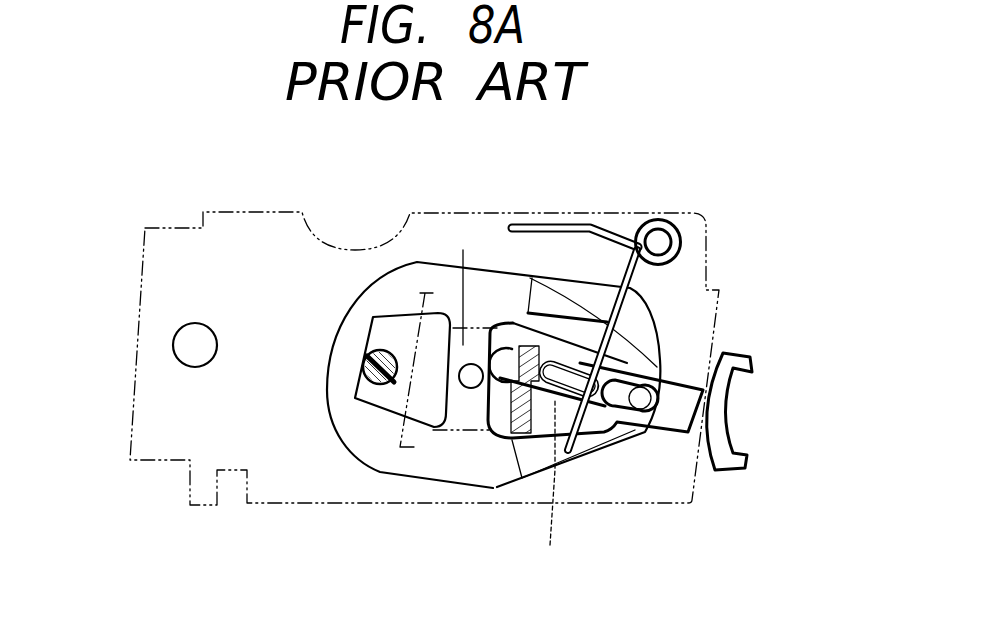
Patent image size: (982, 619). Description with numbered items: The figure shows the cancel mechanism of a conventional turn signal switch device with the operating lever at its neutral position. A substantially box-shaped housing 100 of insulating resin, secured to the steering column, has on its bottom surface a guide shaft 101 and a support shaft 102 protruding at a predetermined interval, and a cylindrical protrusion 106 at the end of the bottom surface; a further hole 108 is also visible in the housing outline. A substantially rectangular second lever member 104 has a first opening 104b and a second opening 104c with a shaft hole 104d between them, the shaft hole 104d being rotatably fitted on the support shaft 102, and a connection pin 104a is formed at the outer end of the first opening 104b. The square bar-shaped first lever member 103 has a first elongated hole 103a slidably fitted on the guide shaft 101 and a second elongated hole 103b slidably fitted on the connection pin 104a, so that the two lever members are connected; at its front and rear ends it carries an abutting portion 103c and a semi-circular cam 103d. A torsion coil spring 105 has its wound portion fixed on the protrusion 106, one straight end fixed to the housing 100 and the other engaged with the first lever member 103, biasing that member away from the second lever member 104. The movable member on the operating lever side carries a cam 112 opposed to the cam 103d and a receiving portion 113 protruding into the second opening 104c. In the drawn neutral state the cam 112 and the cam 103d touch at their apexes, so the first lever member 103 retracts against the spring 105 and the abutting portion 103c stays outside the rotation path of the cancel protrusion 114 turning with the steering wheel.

The housing 100 is at (143, 462).
The guide shaft 101 is at (556, 485).
The support shaft 102 is at (473, 378).
The first lever member 103 is at (681, 377).
The first elongated hole 103a is at (568, 360).
The second elongated hole 103b is at (603, 412).
The abutting portion 103c is at (687, 401).
The cam 103d is at (503, 420).
The second lever member 104 is at (417, 262).
The connection pin 104a is at (660, 402).
The first opening 104b is at (613, 357).
The second opening 104c is at (383, 410).
The shaft hole 104d is at (466, 250).
The torsion coil spring 105 is at (610, 233).
The protrusion 106 is at (660, 240).
The hole 108 is at (184, 345).
The cam 112 is at (513, 323).
The receiving portion 113 is at (363, 363).
The cancel protrusion 114 is at (745, 352).